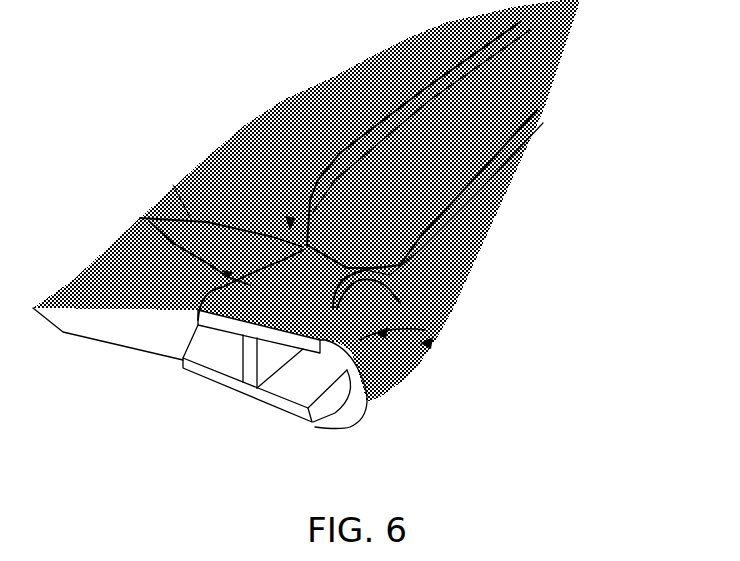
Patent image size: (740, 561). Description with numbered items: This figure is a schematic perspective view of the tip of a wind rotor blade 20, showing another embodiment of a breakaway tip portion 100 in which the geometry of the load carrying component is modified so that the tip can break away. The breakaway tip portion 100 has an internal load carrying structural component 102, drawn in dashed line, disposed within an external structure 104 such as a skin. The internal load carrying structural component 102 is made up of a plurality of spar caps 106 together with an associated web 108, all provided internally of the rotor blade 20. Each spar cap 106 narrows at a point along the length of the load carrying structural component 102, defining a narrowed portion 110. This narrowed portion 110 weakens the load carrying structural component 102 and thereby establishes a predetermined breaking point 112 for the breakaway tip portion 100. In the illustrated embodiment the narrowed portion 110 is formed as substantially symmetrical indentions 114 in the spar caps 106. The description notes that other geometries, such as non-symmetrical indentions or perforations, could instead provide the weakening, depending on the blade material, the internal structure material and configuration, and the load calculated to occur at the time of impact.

The rotor blade 20 is at (365, 232).
The breakaway tip portion 100 is at (552, 87).
The internal load carrying structural component 102 is at (480, 267).
The external structure 104 is at (388, 52).
The spar caps 106 is at (200, 318).
The web 108 is at (263, 363).
The narrowed portion 110 is at (417, 362).
The predetermined breaking point 112 is at (173, 185).
The symmetrical indentions 114 is at (245, 125).